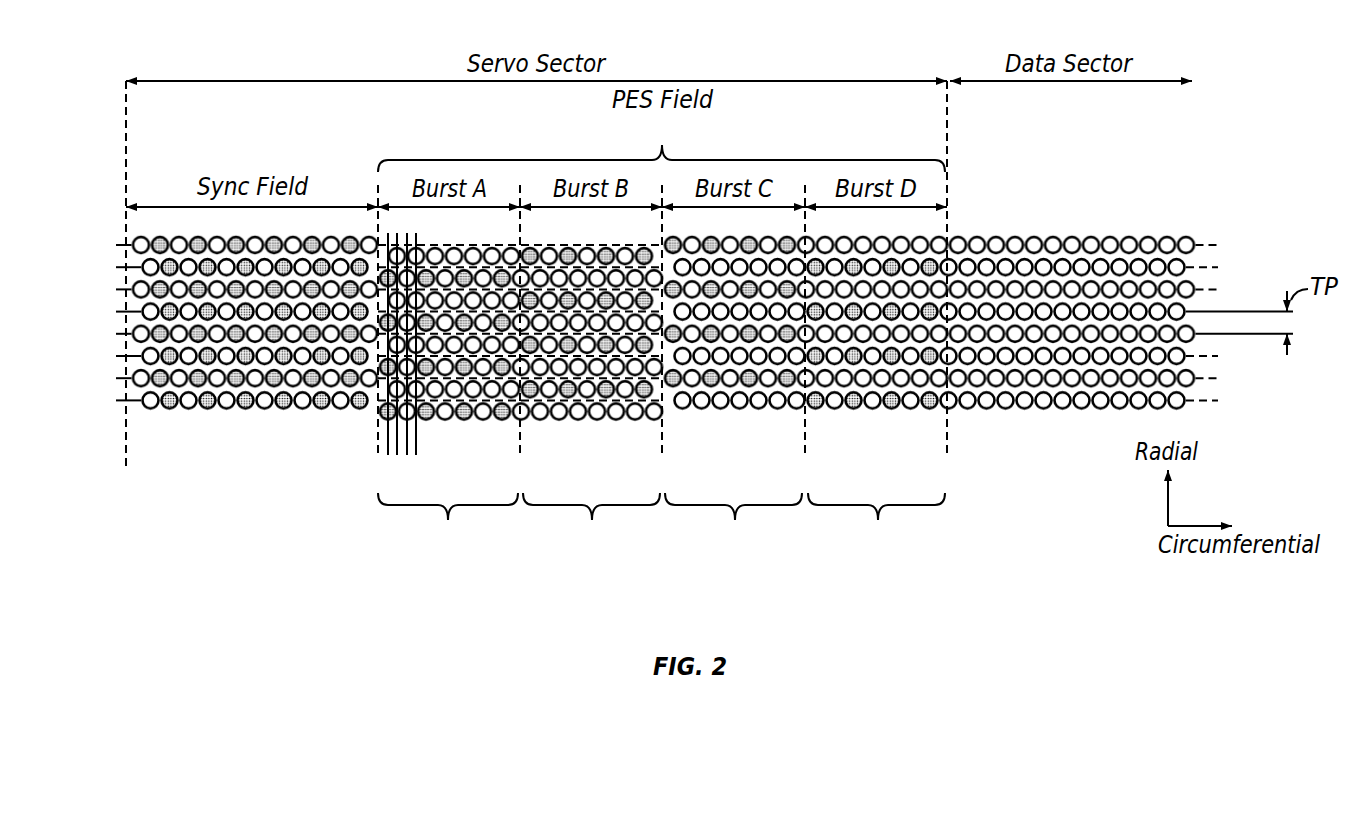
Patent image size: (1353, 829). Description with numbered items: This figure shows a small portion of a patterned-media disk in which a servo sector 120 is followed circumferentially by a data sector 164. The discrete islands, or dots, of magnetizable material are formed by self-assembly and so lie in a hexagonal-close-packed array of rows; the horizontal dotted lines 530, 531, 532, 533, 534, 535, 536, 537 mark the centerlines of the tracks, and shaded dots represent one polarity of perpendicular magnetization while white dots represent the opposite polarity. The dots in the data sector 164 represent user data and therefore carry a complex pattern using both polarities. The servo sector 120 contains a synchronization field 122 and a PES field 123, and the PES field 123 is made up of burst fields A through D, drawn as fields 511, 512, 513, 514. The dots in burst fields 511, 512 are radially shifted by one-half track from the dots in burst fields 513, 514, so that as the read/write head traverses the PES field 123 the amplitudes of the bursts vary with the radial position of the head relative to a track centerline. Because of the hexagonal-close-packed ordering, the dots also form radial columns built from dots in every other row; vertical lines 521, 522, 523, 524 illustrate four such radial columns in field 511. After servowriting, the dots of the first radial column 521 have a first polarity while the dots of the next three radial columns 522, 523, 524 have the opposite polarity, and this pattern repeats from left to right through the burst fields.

The servo sector 120 is at (328, 80).
The data sector 164 is at (964, 80).
The synchronization (sync) field 122 is at (146, 205).
The PES field 123 is at (661, 143).
The burst field A 511 is at (449, 377).
The burst field B 512 is at (591, 378).
The burst field C 513 is at (733, 378).
The burst field D 514 is at (876, 378).
The first radial column 521 is at (388, 428).
The second radial column 522 is at (397, 449).
The third radial column 523 is at (407, 449).
The fourth radial column 524 is at (416, 427).
The track position 530 is at (1203, 403).
The track centerline 531 is at (1215, 379).
The track centerline 532 is at (1213, 357).
The track centerline 533 is at (1212, 334).
The track centerline 534 is at (1208, 312).
The track centerline 535 is at (1203, 290).
The track centerline 536 is at (1210, 267).
The track centerline 537 is at (1203, 245).